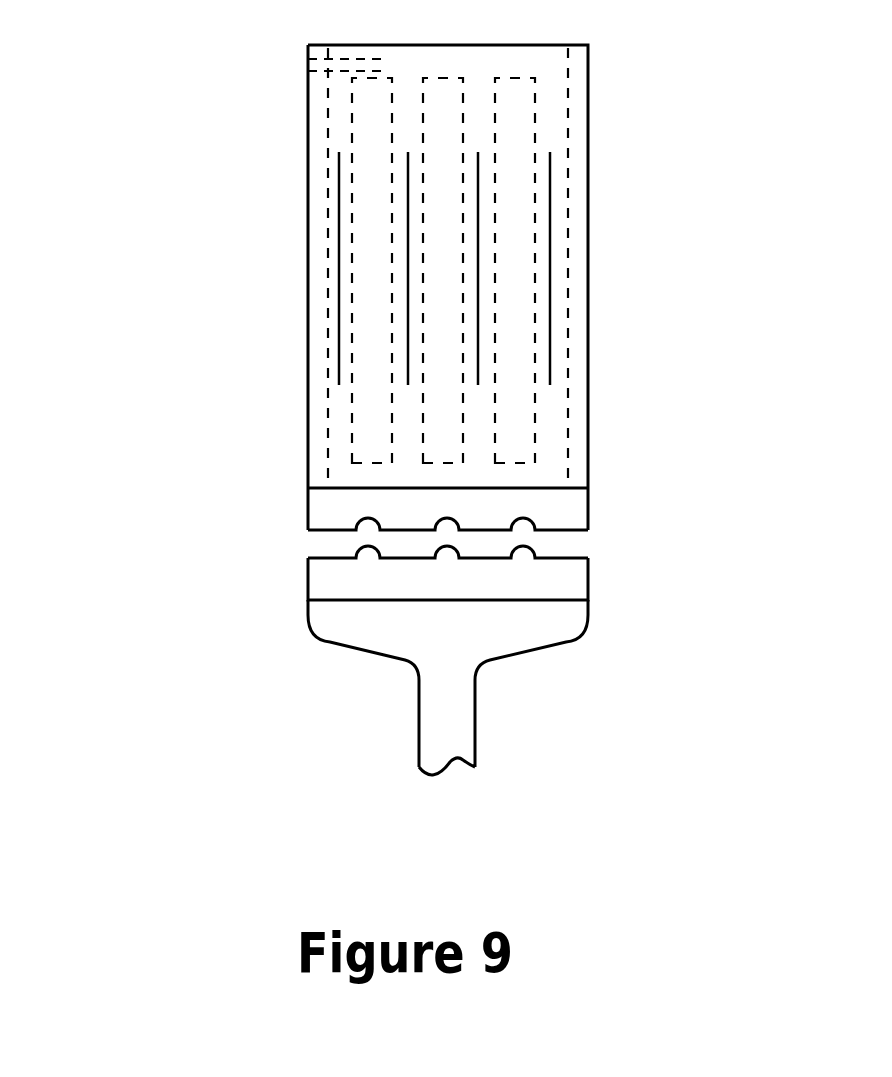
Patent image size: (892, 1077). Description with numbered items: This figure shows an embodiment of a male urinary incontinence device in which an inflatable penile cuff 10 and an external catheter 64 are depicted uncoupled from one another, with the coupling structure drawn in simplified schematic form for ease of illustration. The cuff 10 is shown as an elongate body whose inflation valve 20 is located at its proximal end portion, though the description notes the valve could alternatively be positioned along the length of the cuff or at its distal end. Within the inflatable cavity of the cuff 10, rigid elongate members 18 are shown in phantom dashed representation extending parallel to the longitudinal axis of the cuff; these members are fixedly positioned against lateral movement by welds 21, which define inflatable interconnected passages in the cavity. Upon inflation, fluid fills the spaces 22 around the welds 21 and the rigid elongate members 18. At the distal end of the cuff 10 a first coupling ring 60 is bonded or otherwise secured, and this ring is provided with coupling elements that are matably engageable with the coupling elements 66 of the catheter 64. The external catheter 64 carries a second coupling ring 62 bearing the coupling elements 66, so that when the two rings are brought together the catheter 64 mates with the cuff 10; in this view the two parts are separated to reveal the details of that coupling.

The inflatable cuff 10 is at (254, 230).
The rigid elongate members 18 is at (537, 130).
The inflation valve 20 is at (307, 62).
The welds 21 is at (550, 223).
The spaces 22 is at (548, 423).
The first coupling ring 60 is at (568, 497).
The second coupling ring 62 is at (557, 580).
The external catheter 64 is at (360, 632).
The coupling elements 66 is at (363, 548).